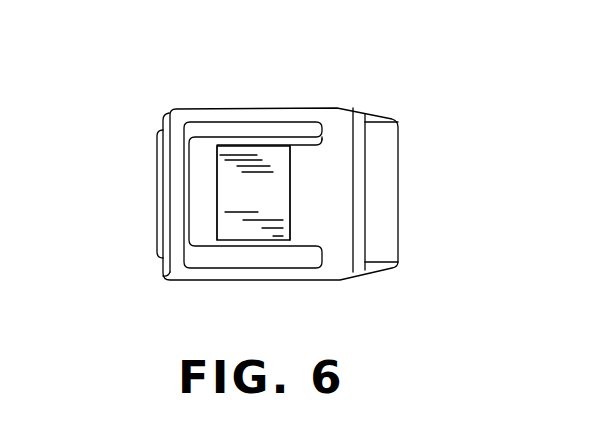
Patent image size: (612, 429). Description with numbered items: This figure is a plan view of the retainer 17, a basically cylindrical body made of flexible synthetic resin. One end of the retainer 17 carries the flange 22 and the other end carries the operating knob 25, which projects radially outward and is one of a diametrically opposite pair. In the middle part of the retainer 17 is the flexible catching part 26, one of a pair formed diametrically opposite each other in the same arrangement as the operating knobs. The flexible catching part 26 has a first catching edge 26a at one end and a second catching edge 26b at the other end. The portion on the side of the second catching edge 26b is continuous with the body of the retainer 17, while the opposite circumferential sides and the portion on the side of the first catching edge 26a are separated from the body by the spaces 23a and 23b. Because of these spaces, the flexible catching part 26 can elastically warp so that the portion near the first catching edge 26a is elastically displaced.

The retainer 17 is at (302, 98).
The flange 22 is at (188, 137).
The space 23a is at (200, 173).
The space 23b is at (248, 146).
The operating knob 25 is at (387, 135).
The flexible catching part 26 is at (266, 217).
The first catching edge 26a is at (216, 209).
The second catching edge 26b is at (290, 189).